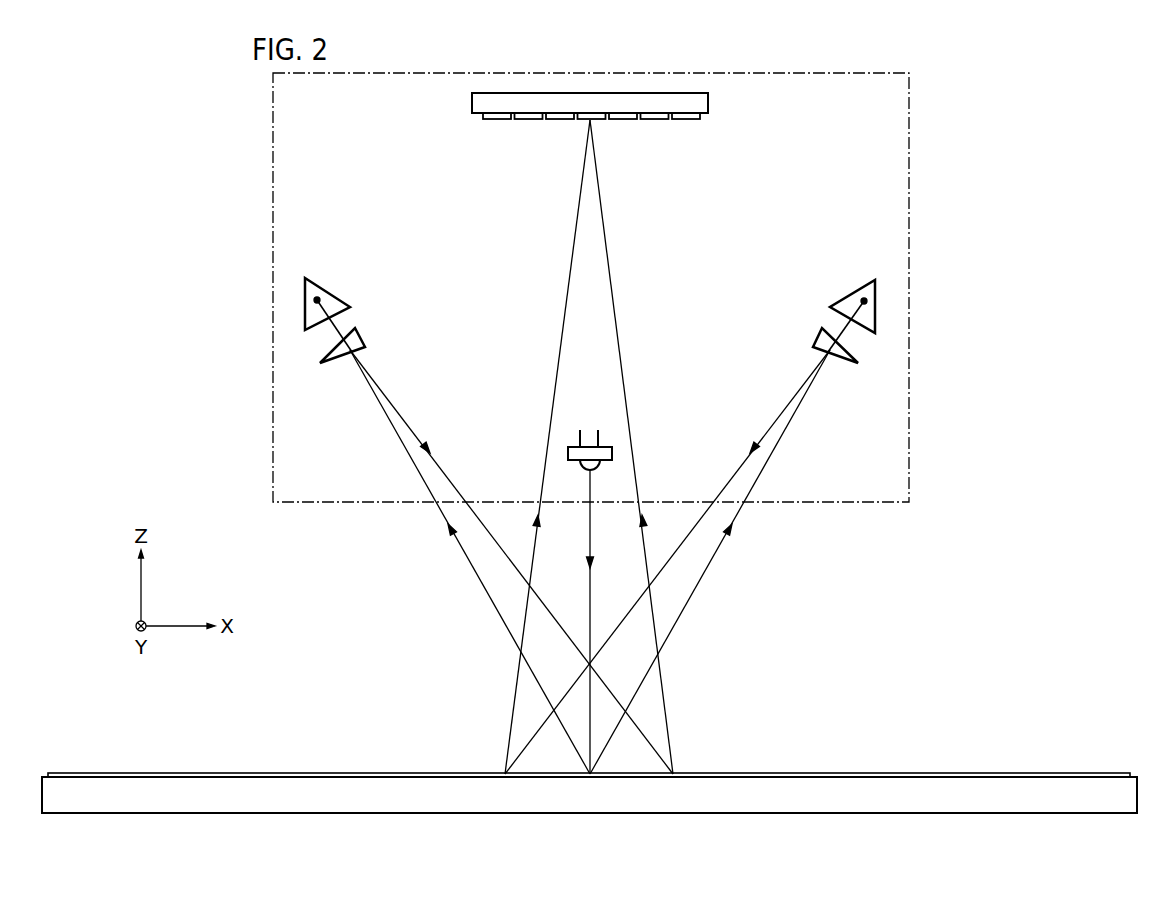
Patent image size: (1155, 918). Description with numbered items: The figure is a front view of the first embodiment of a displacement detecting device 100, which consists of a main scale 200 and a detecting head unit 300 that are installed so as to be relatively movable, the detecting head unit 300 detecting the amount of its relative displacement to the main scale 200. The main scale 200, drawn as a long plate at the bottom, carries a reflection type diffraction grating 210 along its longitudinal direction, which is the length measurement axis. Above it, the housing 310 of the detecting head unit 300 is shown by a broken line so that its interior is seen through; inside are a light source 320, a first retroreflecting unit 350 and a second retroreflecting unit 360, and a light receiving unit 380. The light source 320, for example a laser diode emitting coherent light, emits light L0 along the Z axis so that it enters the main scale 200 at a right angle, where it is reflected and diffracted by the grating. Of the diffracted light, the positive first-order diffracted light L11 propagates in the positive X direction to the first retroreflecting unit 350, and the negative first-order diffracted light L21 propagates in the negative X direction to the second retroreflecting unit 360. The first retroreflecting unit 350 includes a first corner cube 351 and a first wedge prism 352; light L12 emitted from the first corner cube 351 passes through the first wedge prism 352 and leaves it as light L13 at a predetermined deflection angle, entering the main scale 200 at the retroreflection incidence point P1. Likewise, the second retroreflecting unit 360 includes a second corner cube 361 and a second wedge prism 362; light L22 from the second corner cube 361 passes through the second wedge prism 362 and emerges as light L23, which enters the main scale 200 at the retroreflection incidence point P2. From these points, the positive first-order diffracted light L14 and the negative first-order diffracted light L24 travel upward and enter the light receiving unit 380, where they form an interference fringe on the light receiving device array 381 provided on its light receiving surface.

The displacement detecting device 100 is at (203, 117).
The main scale 200 is at (957, 795).
The reflection type diffraction grating 210 is at (897, 773).
The detecting head unit 300 is at (928, 156).
The housing 310 is at (910, 103).
The light source 320 is at (590, 445).
The first retroreflecting unit 350 is at (866, 309).
The first corner cube 351 is at (875, 313).
The first wedge prism 352 is at (848, 360).
The second retroreflecting unit 360 is at (312, 309).
The second corner cube 361 is at (305, 312).
The second wedge prism 362 is at (333, 360).
The light receiving unit 380 is at (697, 103).
The light receiving device array 381 is at (694, 135).
The light L0 is at (592, 520).
The positive first-order diffracted light L11 is at (691, 595).
The light emitted from the first corner cube L12 is at (842, 327).
The light emitted from the first wedge prism L13 is at (730, 478).
The positive first-order diffracted light L14 is at (560, 330).
The negative first-order diffracted light L21 is at (489, 595).
The light emitted from the second corner cube L22 is at (338, 327).
The light emitted from the second wedge prism L23 is at (449, 478).
The negative first-order diffracted light L24 is at (621, 330).
The retroreflection incidence point P1 is at (505, 777).
The retroreflection incidence point P2 is at (673, 777).